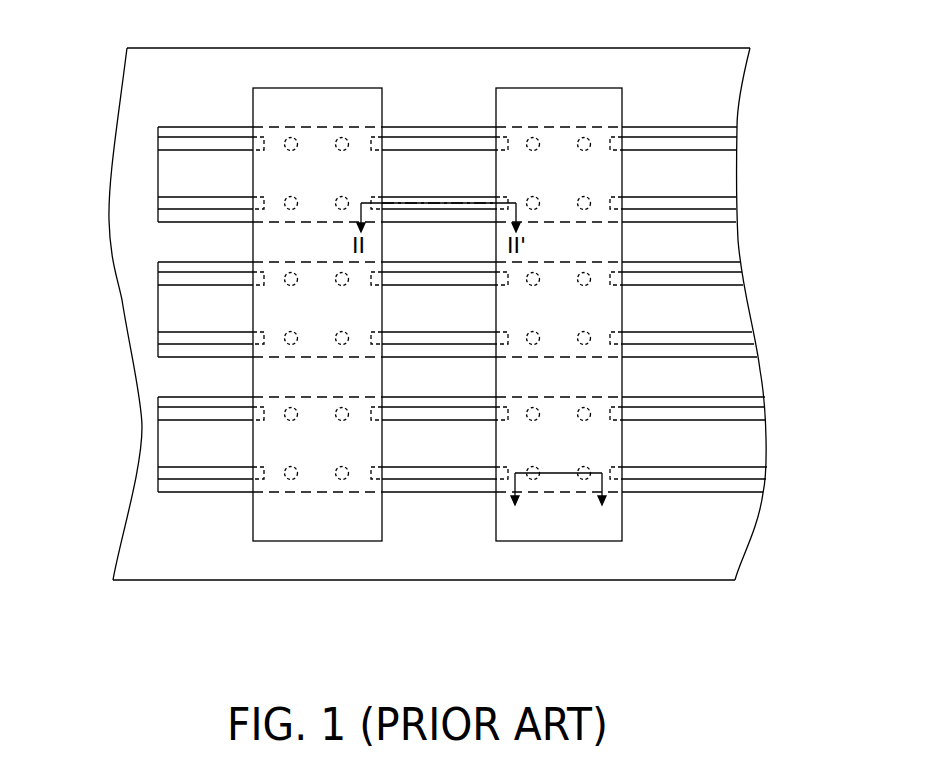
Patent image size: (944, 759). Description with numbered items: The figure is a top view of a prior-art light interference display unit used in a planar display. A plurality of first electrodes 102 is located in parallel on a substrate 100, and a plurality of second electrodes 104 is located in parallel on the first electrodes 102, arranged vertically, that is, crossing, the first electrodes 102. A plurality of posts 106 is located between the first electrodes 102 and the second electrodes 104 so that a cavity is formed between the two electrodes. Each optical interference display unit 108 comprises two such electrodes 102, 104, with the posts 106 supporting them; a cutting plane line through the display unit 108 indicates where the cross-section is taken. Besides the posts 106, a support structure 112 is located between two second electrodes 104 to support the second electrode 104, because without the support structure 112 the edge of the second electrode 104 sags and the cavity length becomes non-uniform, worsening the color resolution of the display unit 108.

The substrate 100 is at (178, 534).
The first electrodes 102 is at (178, 445).
The second electrodes 104 is at (558, 541).
The posts 106 is at (292, 137).
The optical interference display unit 108 is at (579, 457).
The support structure 112 is at (473, 146).